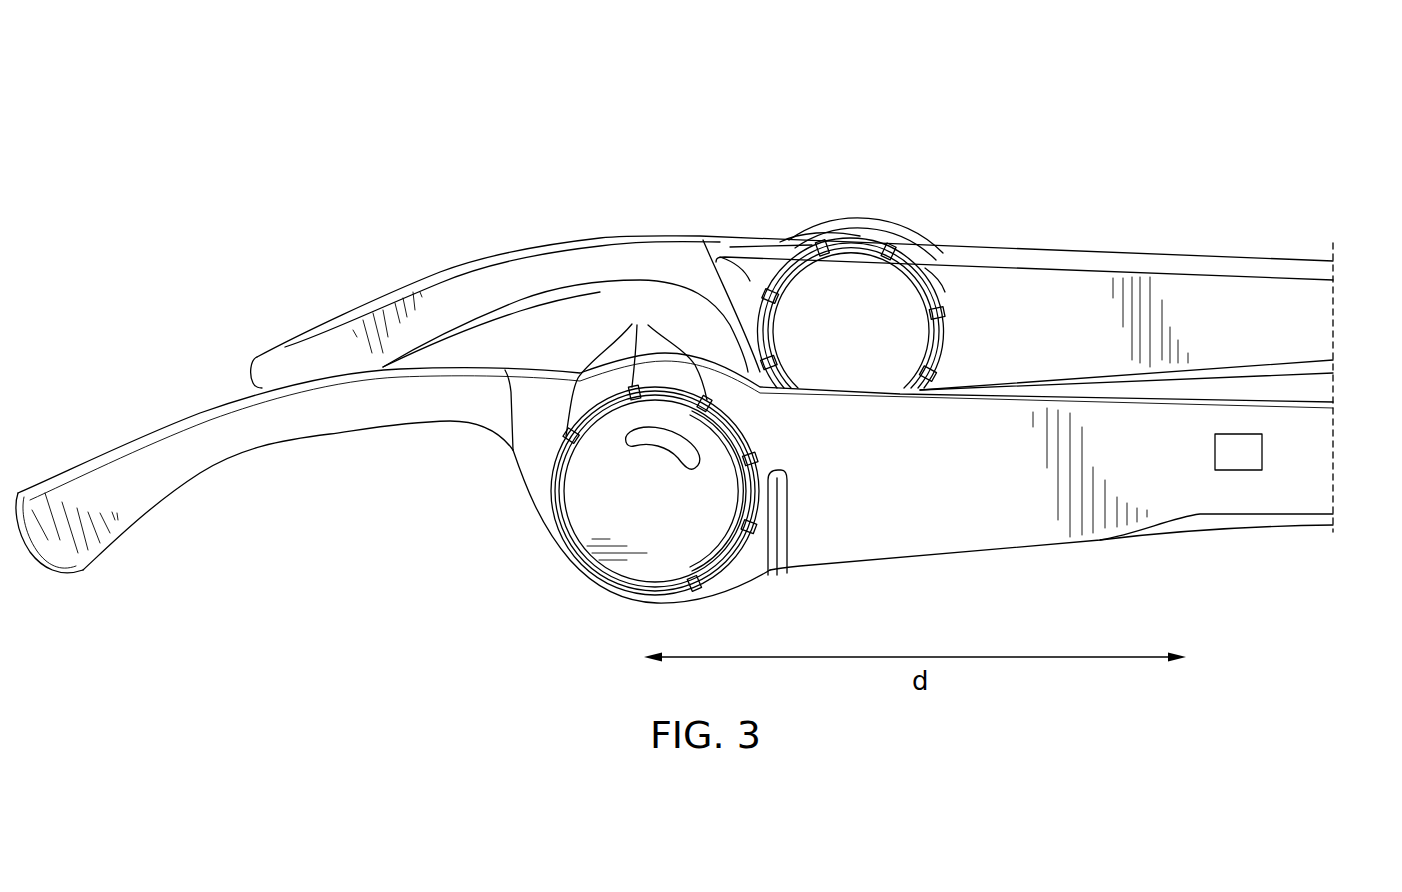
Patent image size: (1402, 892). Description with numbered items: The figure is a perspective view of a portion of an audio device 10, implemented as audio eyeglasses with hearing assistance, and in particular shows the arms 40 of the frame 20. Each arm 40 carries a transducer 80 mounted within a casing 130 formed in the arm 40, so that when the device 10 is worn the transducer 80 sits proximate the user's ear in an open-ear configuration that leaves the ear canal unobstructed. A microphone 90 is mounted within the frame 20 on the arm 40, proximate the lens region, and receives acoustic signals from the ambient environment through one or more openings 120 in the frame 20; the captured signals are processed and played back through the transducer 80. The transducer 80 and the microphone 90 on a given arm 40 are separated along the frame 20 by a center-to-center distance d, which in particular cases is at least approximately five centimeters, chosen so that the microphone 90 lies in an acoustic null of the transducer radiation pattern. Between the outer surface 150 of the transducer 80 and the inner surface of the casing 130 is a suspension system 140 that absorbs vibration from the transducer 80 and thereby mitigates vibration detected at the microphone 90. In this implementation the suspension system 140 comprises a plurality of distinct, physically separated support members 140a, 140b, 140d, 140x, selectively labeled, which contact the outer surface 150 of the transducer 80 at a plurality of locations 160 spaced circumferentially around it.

The device 10 is at (212, 202).
The frame 20 is at (582, 195).
The arm 40 is at (1057, 230).
The transducer 80 is at (852, 367).
The microphone 90 is at (1238, 232).
The opening 120 is at (1290, 391).
The casing 130 is at (835, 225).
The suspension system 140 is at (636, 369).
The support member 140a is at (750, 281).
The support member 140b is at (797, 236).
The support member 140d is at (952, 290).
The support member 140x is at (779, 533).
The outer surface 150 is at (925, 258).
The locations 160 is at (856, 252).